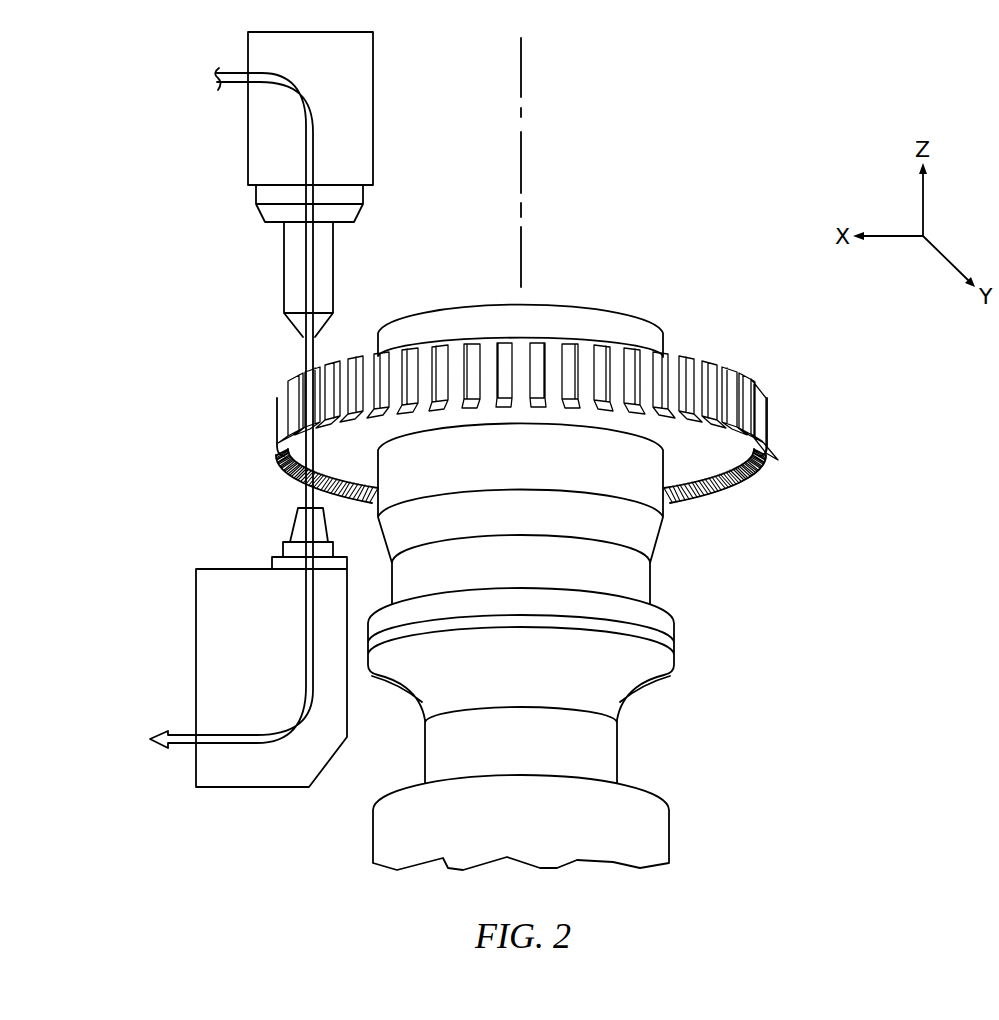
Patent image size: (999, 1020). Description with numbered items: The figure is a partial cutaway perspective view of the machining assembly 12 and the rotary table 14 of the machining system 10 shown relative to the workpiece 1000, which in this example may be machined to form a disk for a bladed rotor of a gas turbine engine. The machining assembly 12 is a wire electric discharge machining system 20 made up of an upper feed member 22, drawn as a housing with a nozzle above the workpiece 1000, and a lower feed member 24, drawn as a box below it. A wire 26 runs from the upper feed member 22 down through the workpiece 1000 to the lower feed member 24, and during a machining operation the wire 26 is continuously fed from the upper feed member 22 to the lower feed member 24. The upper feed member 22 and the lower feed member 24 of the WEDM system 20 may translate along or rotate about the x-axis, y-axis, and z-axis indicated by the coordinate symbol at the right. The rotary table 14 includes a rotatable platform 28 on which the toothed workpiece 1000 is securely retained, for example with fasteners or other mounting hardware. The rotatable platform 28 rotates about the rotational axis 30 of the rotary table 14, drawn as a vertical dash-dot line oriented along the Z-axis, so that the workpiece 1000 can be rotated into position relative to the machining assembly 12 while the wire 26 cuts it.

The machining system 10 is at (695, 115).
The machining assembly 12 is at (138, 103).
The rotary table 14 is at (548, 587).
The wire electric discharge machining (WEDM) system 20 is at (299, 184).
The upper feed member 22 is at (374, 80).
The lower feed member 24 is at (196, 641).
The wire 26 is at (313, 150).
The rotatable platform 28 is at (637, 485).
The rotational axis 30 is at (521, 52).
The workpiece 1000 is at (685, 463).